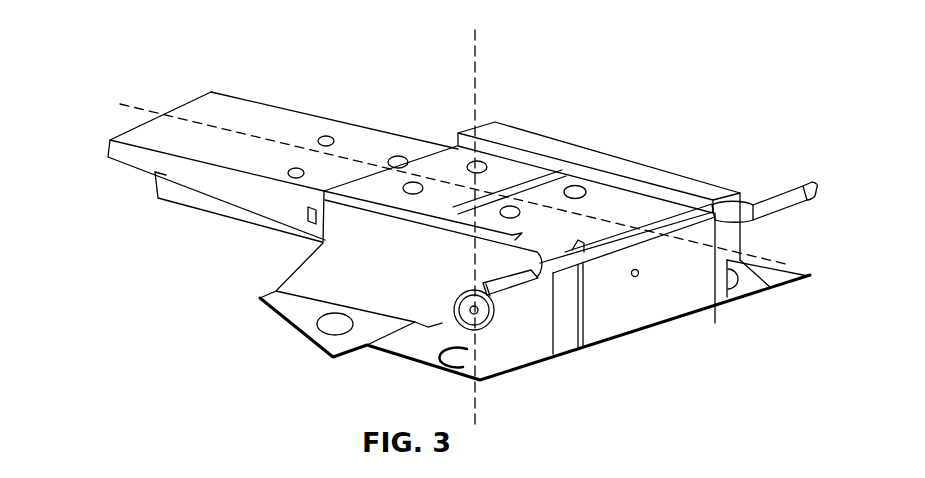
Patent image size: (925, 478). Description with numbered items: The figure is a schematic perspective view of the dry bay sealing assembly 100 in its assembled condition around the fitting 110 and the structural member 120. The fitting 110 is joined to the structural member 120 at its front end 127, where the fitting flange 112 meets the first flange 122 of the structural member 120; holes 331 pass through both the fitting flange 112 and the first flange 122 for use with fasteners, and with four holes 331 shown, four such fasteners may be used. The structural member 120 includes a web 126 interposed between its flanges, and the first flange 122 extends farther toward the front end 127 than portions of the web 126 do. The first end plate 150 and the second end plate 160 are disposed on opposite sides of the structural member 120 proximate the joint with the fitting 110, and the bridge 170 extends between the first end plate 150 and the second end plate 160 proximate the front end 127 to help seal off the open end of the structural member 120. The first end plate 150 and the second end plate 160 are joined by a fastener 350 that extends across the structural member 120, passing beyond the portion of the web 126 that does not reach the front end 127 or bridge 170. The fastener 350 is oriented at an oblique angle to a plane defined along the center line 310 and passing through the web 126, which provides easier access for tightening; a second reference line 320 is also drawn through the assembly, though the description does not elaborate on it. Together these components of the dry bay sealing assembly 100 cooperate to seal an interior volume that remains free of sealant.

The dry bay sealing assembly 100 is at (245, 43).
The fitting 110 is at (541, 222).
The fitting flange 112 is at (583, 243).
The structural member 120 is at (182, 150).
The first flange 122 is at (218, 184).
The web 126 is at (168, 192).
The front end 127 is at (660, 287).
The first end plate 150 is at (668, 172).
The second end plate 160 is at (345, 266).
The bridge 170 is at (630, 302).
The center line 310 is at (215, 128).
The vertical axis 320 is at (478, 112).
The holes 331 is at (586, 197).
The fastener 350 is at (438, 336).